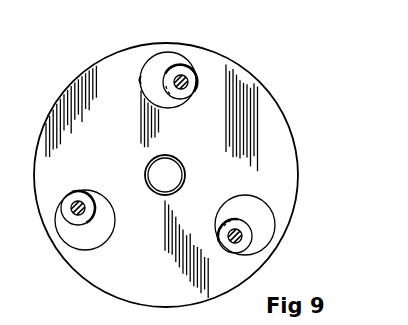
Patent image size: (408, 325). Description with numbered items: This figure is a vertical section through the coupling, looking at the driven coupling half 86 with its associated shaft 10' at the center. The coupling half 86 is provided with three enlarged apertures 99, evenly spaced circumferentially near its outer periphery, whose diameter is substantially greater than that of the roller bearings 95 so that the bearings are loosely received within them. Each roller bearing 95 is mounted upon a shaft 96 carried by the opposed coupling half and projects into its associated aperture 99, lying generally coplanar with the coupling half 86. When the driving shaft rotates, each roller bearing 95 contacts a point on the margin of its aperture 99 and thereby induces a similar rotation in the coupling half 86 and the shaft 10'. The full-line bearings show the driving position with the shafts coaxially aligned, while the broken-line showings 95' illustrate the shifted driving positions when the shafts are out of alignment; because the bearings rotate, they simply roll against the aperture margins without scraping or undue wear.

The coupling half 86 is at (272, 97).
The enlarged apertures 99 is at (141, 81).
The roller bearings 95 is at (205, 63).
The shafts 96 is at (181, 78).
The shaft 10' is at (186, 164).
The roller bearings in shifted driving positions 95' is at (165, 196).